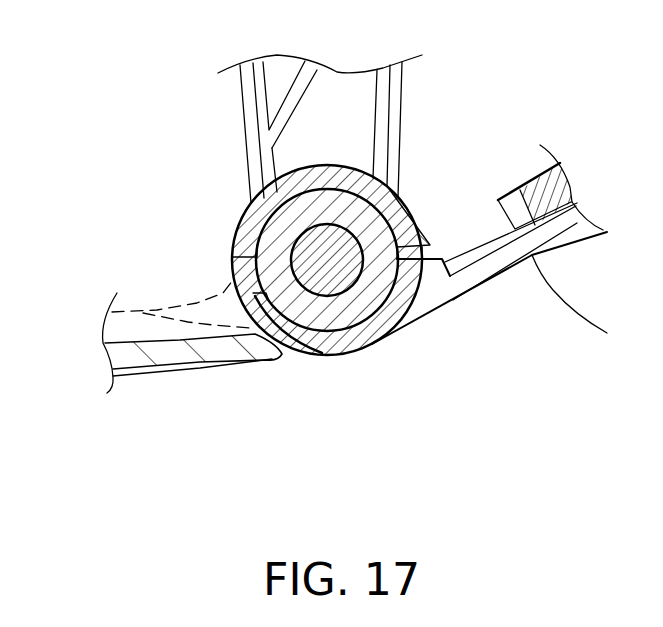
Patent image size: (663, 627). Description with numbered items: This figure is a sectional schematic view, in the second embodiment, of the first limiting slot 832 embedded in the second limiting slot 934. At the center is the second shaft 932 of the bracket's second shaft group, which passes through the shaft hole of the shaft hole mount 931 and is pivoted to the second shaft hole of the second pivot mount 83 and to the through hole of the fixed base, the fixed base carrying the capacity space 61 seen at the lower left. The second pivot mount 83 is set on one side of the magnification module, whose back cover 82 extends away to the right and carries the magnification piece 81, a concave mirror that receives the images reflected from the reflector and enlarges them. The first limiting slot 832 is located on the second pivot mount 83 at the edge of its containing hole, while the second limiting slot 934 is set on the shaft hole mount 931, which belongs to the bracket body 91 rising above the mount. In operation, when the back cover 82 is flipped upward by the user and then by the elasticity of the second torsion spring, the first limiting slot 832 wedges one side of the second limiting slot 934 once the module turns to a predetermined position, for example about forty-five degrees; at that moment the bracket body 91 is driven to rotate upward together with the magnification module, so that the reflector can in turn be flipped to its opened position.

The capacity space 61 is at (203, 360).
The magnification piece 81 is at (527, 182).
The back cover 82 is at (530, 263).
The second pivot mount 83 is at (312, 342).
The bracket body 91 is at (402, 108).
The first limiting slot 832 is at (250, 203).
The shaft hole mount 931 is at (320, 255).
The second shaft 932 is at (275, 230).
The second limiting slot 934 is at (240, 257).